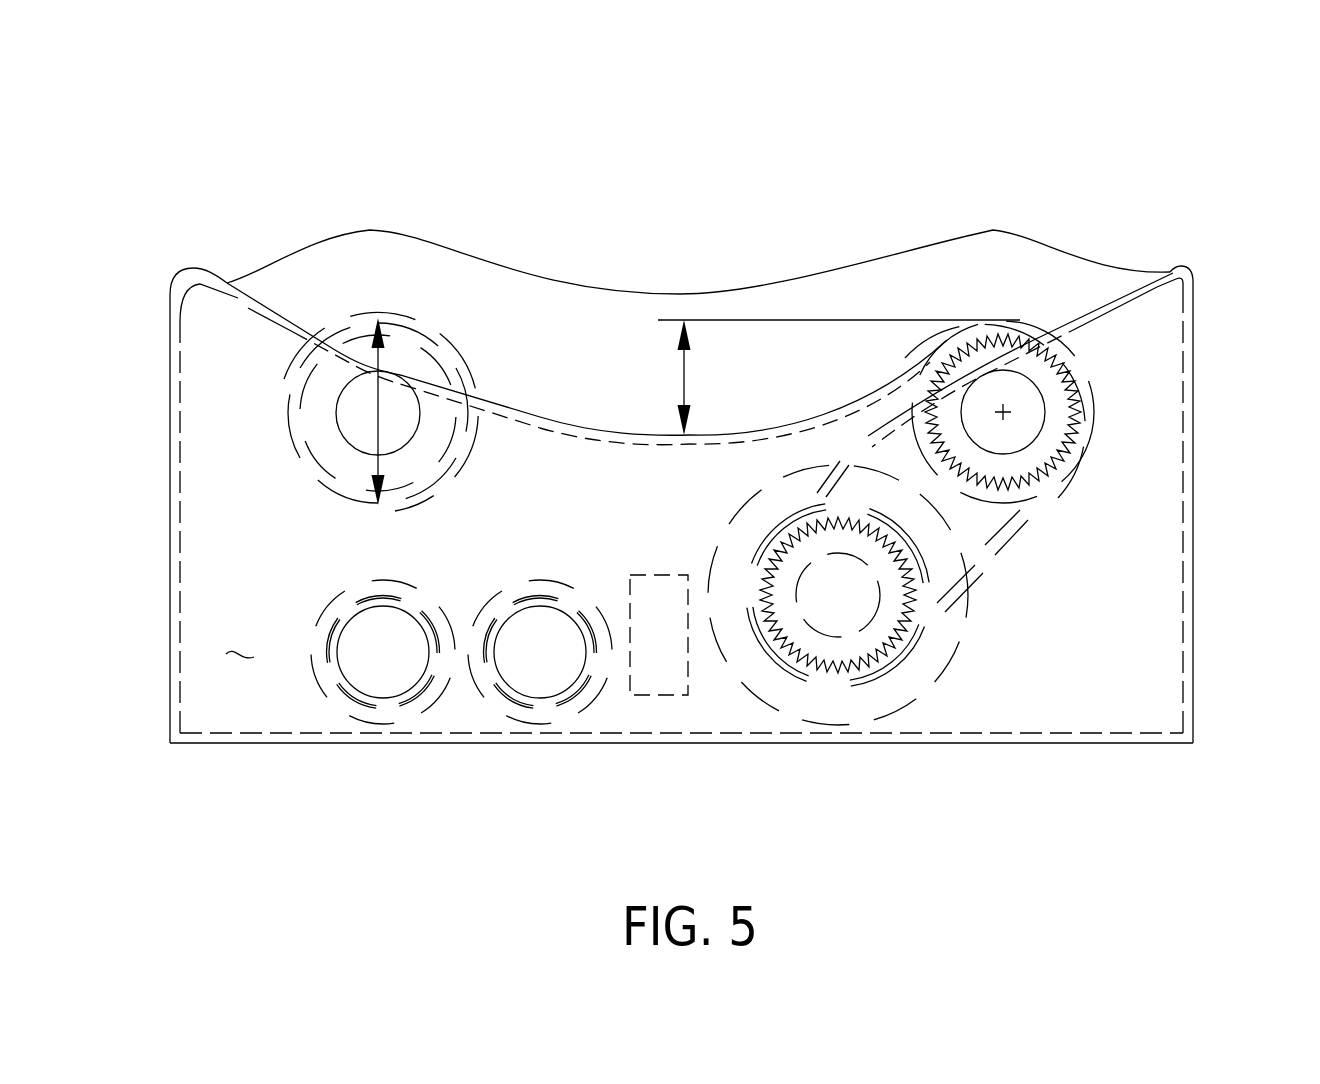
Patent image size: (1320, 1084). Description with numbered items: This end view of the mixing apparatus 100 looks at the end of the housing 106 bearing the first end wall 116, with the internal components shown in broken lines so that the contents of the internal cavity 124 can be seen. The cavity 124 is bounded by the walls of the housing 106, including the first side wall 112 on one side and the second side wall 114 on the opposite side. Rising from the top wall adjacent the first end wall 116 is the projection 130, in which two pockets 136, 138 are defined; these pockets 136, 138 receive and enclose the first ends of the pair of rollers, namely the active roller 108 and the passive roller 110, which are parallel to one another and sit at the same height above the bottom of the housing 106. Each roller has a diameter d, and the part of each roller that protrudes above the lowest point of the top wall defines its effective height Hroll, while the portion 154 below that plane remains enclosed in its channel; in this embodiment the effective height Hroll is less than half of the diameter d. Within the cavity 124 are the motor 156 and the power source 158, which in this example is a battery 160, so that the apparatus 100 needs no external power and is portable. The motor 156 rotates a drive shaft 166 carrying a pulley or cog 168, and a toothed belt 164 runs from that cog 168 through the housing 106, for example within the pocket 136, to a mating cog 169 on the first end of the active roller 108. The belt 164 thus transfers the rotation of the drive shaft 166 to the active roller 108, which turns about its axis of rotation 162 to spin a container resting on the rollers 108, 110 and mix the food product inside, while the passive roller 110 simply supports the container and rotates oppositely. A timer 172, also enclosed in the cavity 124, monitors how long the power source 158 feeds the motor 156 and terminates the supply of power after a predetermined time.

The mixing apparatus 100 is at (1108, 148).
The housing 106 is at (1173, 408).
The active roller 108 is at (1097, 372).
The passive roller 110 is at (427, 330).
The first side wall 112 is at (1194, 618).
The second side wall 114 is at (170, 545).
The first end wall 116 is at (1108, 700).
The internal cavity 124 is at (250, 662).
The projection 130 is at (690, 302).
The pocket 136 is at (1000, 310).
The pocket 138 is at (387, 307).
The portion of the rollers below the top wall plane 154 is at (427, 490).
The motor 156 is at (960, 664).
The power source 158 is at (452, 725).
The battery 160 is at (555, 580).
The axis of rotation 162 is at (1015, 425).
The belt 164 is at (1040, 560).
The drive shaft 166 is at (886, 676).
The pulley or cog 168 is at (792, 653).
The pulley or cog 169 is at (1090, 410).
The timer 172 is at (648, 672).
The diameter d is at (370, 402).
The effective height Hroll is at (680, 378).